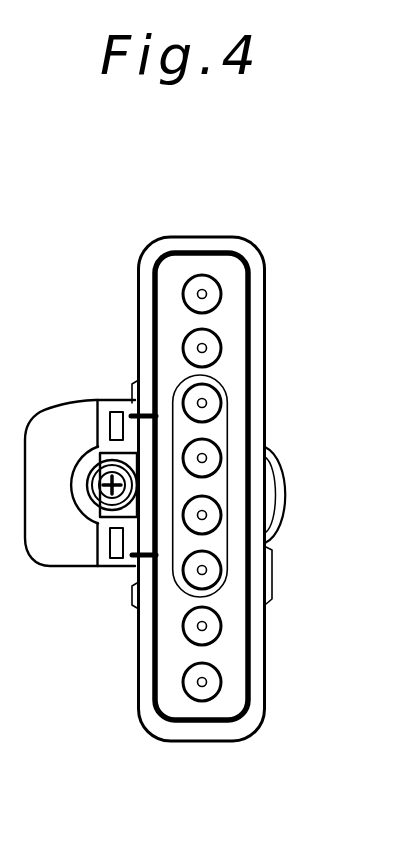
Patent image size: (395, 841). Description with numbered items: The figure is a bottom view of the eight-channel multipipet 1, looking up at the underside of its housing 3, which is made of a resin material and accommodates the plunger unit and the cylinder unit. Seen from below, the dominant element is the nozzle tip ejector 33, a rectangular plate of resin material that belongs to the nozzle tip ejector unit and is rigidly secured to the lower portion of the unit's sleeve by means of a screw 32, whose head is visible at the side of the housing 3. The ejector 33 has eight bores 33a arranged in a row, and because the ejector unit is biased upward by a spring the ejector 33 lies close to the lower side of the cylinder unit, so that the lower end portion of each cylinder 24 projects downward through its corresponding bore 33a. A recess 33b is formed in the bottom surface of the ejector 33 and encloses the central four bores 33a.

The 8-channel multipipet 1 is at (150, 232).
The housing 3 is at (238, 228).
The cylinder 24 is at (186, 288).
The screw 32 is at (96, 512).
The nozzle tip ejector 33 is at (180, 708).
The bore 33a is at (208, 284).
The recess 33b is at (222, 431).